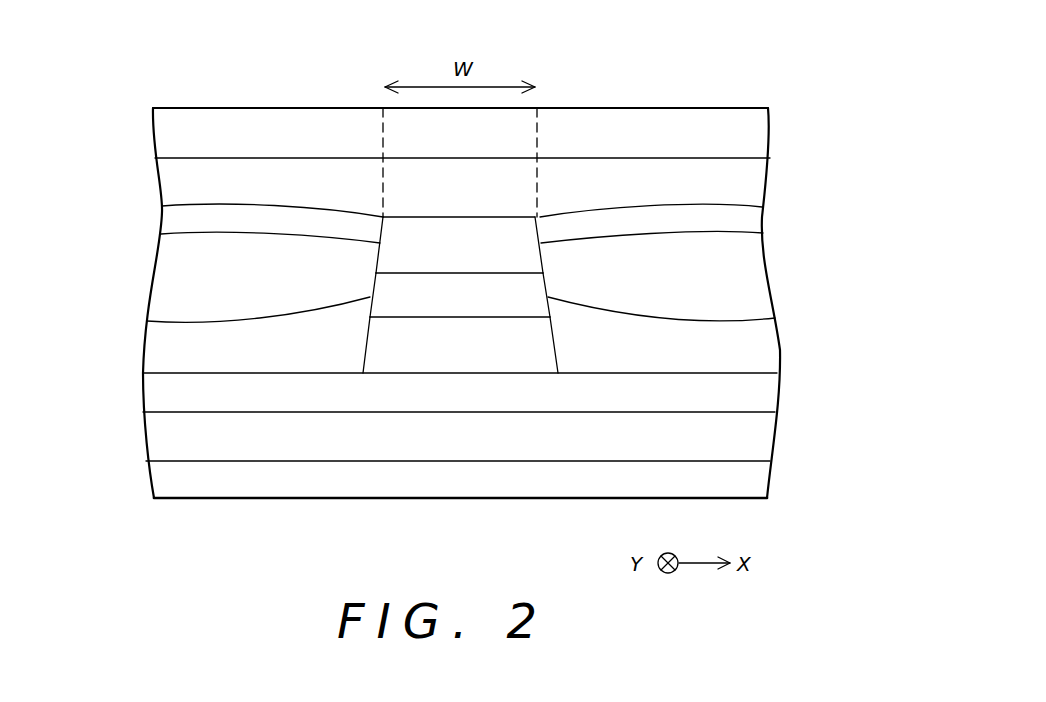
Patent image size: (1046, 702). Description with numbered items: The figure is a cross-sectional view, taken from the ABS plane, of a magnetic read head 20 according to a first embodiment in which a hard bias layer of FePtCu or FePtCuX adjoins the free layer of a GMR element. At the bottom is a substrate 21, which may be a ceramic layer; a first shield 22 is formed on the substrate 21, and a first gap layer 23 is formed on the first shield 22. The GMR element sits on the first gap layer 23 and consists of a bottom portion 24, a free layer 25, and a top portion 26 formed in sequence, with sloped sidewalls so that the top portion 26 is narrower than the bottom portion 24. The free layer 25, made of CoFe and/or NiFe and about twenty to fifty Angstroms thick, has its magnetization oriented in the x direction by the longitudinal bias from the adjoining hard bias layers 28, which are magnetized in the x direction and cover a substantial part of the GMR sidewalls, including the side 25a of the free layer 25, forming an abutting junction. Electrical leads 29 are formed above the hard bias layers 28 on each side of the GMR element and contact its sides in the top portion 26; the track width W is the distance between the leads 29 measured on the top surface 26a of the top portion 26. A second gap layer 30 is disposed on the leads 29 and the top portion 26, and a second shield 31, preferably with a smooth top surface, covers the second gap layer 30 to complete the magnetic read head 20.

The magnetic read head 20 is at (145, 104).
The substrate 21 is at (760, 472).
The first shield 22 is at (762, 425).
The first gap layer 23 is at (765, 386).
The bottom portion 24 is at (400, 357).
The free layer 25 is at (455, 300).
The side of the free layer 25a is at (147, 321).
The top portion 26 is at (508, 242).
The top surface of the top portion 26a is at (503, 217).
The hard bias layers 28 is at (161, 281).
The electrical leads 29 is at (167, 219).
The second gap layer 30 is at (755, 171).
The second shield 31 is at (755, 128).